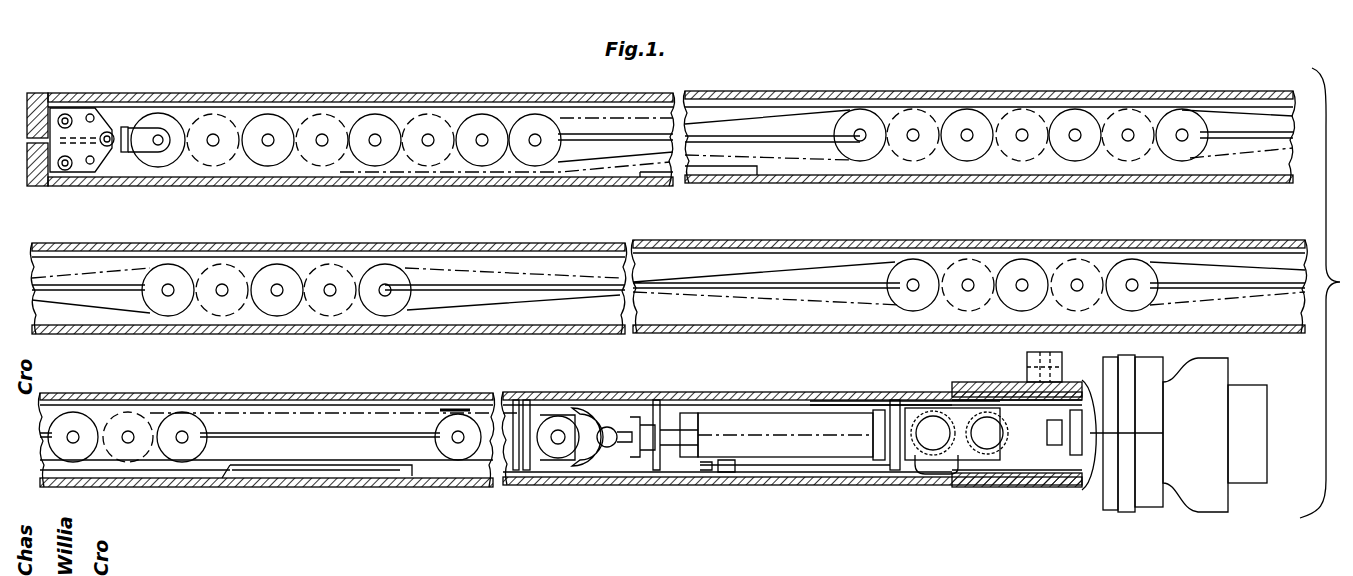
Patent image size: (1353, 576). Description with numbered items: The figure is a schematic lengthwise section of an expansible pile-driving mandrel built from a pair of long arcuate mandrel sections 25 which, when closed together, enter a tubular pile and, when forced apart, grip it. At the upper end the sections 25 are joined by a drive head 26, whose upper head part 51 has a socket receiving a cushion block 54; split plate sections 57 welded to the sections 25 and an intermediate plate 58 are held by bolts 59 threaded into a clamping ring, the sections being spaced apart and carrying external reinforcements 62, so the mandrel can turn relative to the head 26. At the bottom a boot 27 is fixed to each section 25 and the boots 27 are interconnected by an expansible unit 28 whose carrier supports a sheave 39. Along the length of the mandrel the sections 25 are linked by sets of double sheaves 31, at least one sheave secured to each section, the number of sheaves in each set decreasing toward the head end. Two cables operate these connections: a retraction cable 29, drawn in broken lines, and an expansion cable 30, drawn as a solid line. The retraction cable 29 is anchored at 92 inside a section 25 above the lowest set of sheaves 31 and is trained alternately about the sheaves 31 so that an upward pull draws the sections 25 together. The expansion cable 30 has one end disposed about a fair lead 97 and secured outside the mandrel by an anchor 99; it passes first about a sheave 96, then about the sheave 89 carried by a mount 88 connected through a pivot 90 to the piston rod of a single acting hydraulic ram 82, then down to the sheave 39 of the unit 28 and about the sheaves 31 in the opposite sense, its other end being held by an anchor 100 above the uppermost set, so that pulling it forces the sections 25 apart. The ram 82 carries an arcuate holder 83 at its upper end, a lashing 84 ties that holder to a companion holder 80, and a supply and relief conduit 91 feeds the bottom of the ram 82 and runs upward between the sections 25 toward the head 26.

The mandrel sections 25 is at (512, 91).
The drive head 26 is at (1191, 454).
The boot 27 is at (27, 93).
The expansible unit 28 is at (113, 103).
The retraction cable 29 is at (818, 160).
The expansion cable 30 is at (768, 118).
The double sheaves 31 is at (318, 128).
The sheave 39 is at (170, 124).
The upper head part 51 is at (1218, 500).
The cushion block 54 is at (1266, 385).
The split plate sections 57 is at (1110, 512).
The intermediate plate 58 is at (1128, 514).
The bolts 59 is at (1158, 376).
The external reinforcements 62 is at (1066, 492).
The holder 80 is at (992, 456).
The ram 82 is at (848, 447).
The arcuate holder 83 is at (930, 458).
The lashing 84 is at (966, 476).
The mount 88 is at (582, 468).
The sheave 89 is at (560, 456).
The pivot 90 is at (609, 450).
The supply and relief conduit 91 is at (782, 470).
The anchor 92 is at (712, 172).
The sheave 96 is at (460, 452).
The fair lead 97 is at (1006, 383).
The anchor 99 is at (1064, 362).
The anchor 100 is at (383, 480).